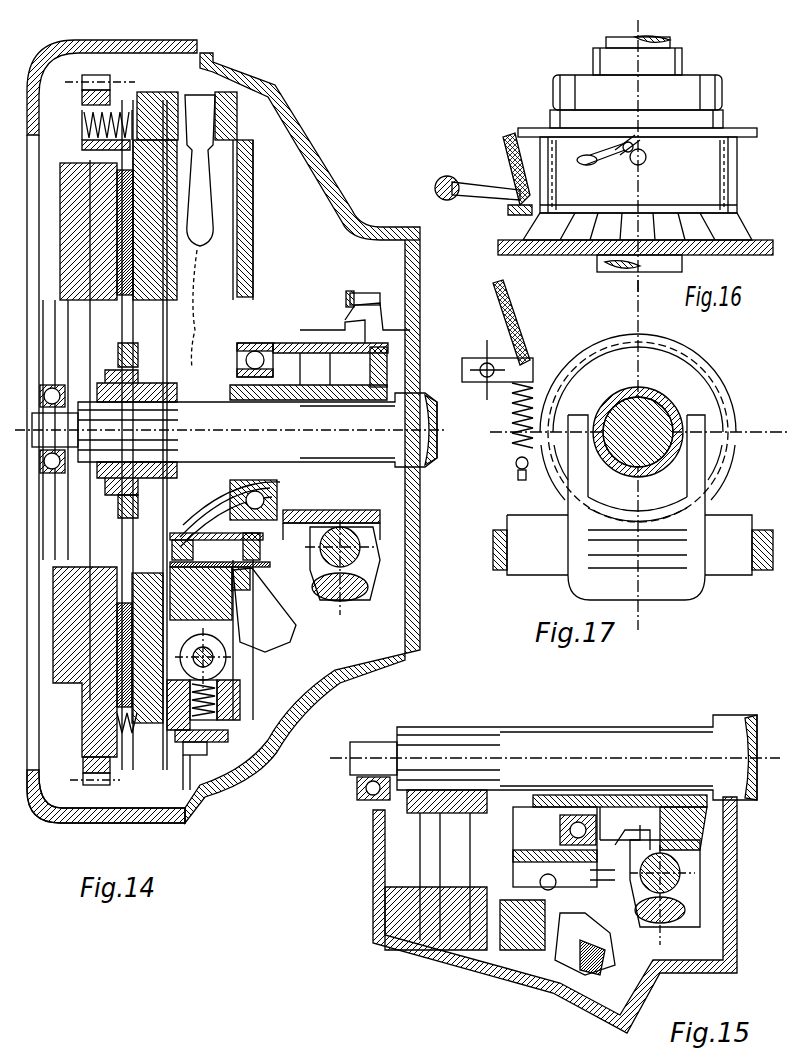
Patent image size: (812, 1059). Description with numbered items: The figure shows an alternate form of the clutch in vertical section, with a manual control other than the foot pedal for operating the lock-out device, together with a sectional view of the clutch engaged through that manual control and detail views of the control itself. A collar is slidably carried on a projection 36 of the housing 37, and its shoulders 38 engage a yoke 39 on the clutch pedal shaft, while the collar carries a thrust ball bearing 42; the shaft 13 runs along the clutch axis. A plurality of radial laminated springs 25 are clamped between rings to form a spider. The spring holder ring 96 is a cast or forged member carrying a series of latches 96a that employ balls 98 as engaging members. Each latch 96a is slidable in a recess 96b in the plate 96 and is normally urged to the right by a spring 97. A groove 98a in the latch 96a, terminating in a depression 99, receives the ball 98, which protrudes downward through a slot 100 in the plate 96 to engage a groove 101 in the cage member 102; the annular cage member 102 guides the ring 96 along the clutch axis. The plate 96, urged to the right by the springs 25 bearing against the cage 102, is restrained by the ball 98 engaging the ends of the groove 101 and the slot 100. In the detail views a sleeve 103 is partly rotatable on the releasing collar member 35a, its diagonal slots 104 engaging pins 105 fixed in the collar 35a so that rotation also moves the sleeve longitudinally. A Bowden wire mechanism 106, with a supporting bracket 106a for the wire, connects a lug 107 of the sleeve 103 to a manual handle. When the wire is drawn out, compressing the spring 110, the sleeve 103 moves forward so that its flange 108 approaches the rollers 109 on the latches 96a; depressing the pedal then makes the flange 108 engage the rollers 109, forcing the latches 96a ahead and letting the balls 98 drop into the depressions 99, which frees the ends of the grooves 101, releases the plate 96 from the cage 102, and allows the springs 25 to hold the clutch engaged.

In FIG. 14, the drive shaft 13 is at (425, 448).
In FIG. 16, the drive shaft 13 is at (615, 42).
In FIG. 17, the drive shaft 13 is at (665, 412).
In FIG. 15, the drive shaft 13 is at (730, 778).
In FIG. 14, the radial laminated springs 25 is at (287, 500).
In FIG. 14, the releasing collar member 35a is at (387, 333).
In FIG. 16, the releasing collar member 35a is at (710, 128).
In FIG. 15, the releasing collar member 35a is at (683, 828).
In FIG. 14, the projection of the housing 36 is at (390, 380).
In FIG. 16, the projection of the housing 36 is at (645, 60).
In FIG. 14, the housing 37 is at (358, 224).
In FIG. 16, the housing 37 is at (530, 248).
In FIG. 15, the housing 37 is at (730, 898).
In FIG. 14, the shoulders 38 is at (337, 367).
In FIG. 17, the shoulders 38 is at (670, 380).
In FIG. 14, the yoke 39 is at (400, 648).
In FIG. 17, the yoke 39 is at (697, 445).
In FIG. 15, the yoke 39 is at (688, 862).
In FIG. 14, the thrust ball bearing 42 is at (258, 342).
In FIG. 16, the thrust ball bearing 42 is at (590, 90).
In FIG. 14, the spring holder ring 96 is at (267, 550).
In FIG. 15, the spring holder ring 96 is at (515, 835).
In FIG. 14, the latches 96a is at (407, 613).
In FIG. 15, the latches 96a is at (595, 880).
In FIG. 14, the recess 96b is at (283, 517).
In FIG. 14, the spring 97 is at (165, 680).
In FIG. 15, the spring 97 is at (515, 870).
In FIG. 14, the balls 98 is at (245, 640).
In FIG. 15, the balls 98 is at (535, 910).
In FIG. 14, the groove in latch 98a is at (233, 627).
In FIG. 15, the groove in latch 98a is at (560, 925).
In FIG. 14, the depression 99 is at (250, 600).
In FIG. 14, the slot in plate 100 is at (225, 598).
In FIG. 15, the slot in plate 100 is at (550, 892).
In FIG. 14, the groove in cage member 101 is at (178, 668).
In FIG. 15, the groove in cage member 101 is at (470, 908).
In FIG. 14, the cage member 102 is at (215, 660).
In FIG. 14, the sleeve 103 is at (357, 330).
In FIG. 16, the sleeve 103 is at (728, 163).
In FIG. 15, the sleeve 103 is at (660, 830).
In FIG. 14, the diagonal slots 104 is at (310, 333).
In FIG. 16, the diagonal slots 104 is at (598, 157).
In FIG. 14, the pins 105 is at (307, 347).
In FIG. 16, the pins 105 is at (633, 140).
In FIG. 15, the pins 105 is at (617, 840).
In FIG. 16, the Bowden wire mechanism 106 is at (508, 155).
In FIG. 17, the Bowden wire mechanism 106 is at (522, 330).
In FIG. 14, the supporting bracket 106a is at (420, 240).
In FIG. 16, the supporting bracket 106a is at (470, 198).
In FIG. 17, the supporting bracket 106a is at (510, 375).
In FIG. 16, the lug 107 is at (515, 212).
In FIG. 17, the lug 107 is at (533, 465).
In FIG. 16, the flange 108 is at (735, 135).
In FIG. 15, the flange 108 is at (590, 795).
In FIG. 14, the rollers 109 is at (347, 590).
In FIG. 15, the rollers 109 is at (590, 880).
In FIG. 17, the spring 110 is at (525, 395).